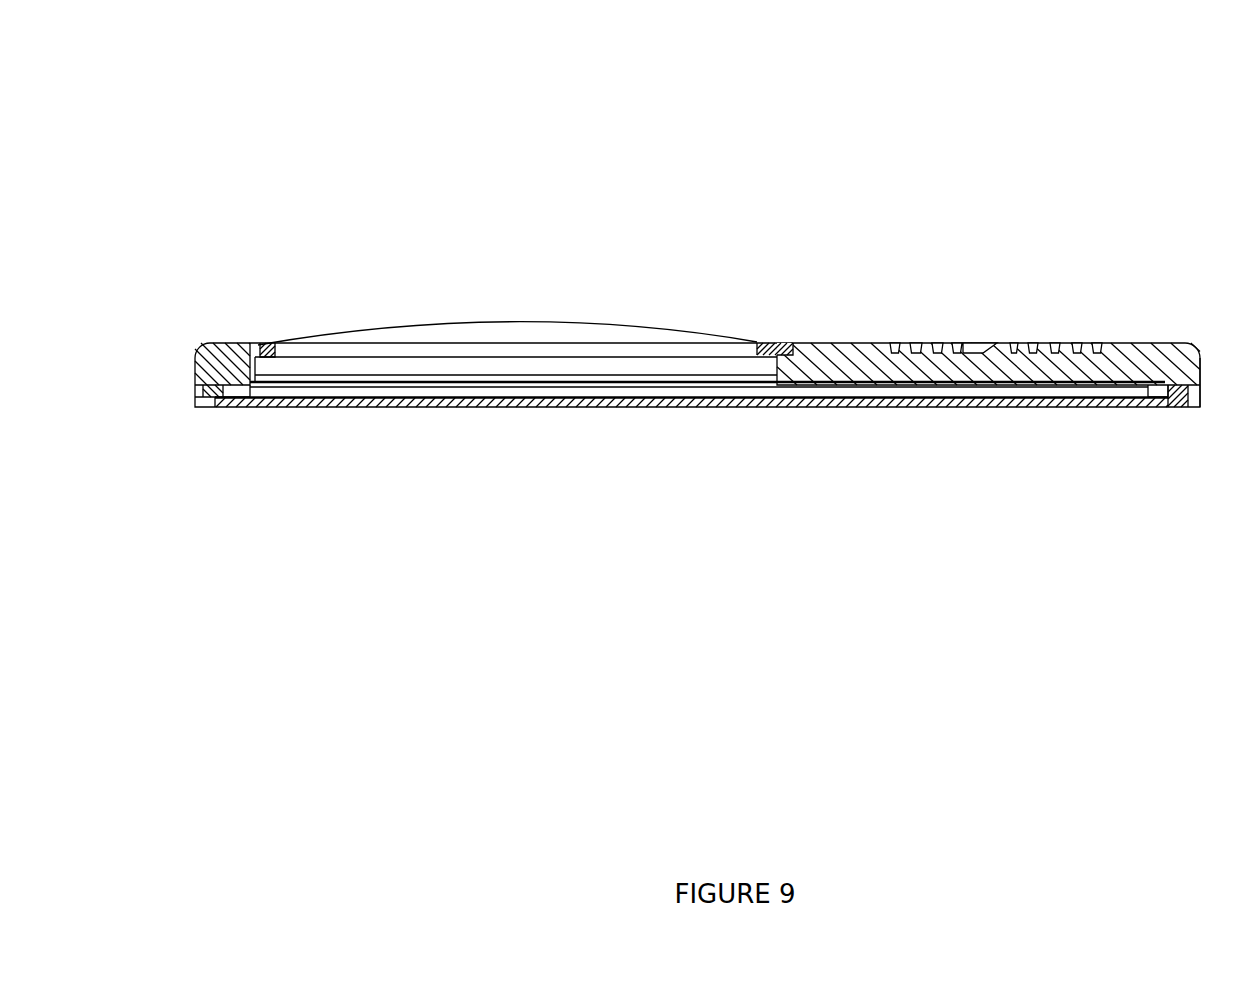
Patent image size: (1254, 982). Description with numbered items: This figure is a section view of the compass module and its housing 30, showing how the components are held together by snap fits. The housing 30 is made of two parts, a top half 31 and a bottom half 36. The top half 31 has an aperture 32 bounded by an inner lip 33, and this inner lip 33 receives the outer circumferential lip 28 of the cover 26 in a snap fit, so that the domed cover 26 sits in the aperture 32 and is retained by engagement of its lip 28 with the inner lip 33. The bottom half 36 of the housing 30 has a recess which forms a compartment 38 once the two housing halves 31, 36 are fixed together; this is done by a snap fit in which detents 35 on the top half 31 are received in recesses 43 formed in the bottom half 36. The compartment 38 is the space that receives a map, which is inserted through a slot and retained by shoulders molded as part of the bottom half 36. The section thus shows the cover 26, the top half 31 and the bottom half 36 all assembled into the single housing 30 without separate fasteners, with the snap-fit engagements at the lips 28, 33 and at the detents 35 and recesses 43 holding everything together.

The cover 26 is at (415, 348).
The outer circumferential lip 28 is at (265, 380).
The housing 30 is at (818, 322).
The top half 31 is at (955, 358).
The aperture 32 is at (292, 382).
The inner lip 33 is at (253, 380).
The detents 35 is at (1197, 368).
The bottom half 36 is at (813, 405).
The compartment 38 is at (1139, 388).
The recesses 43 is at (1185, 390).